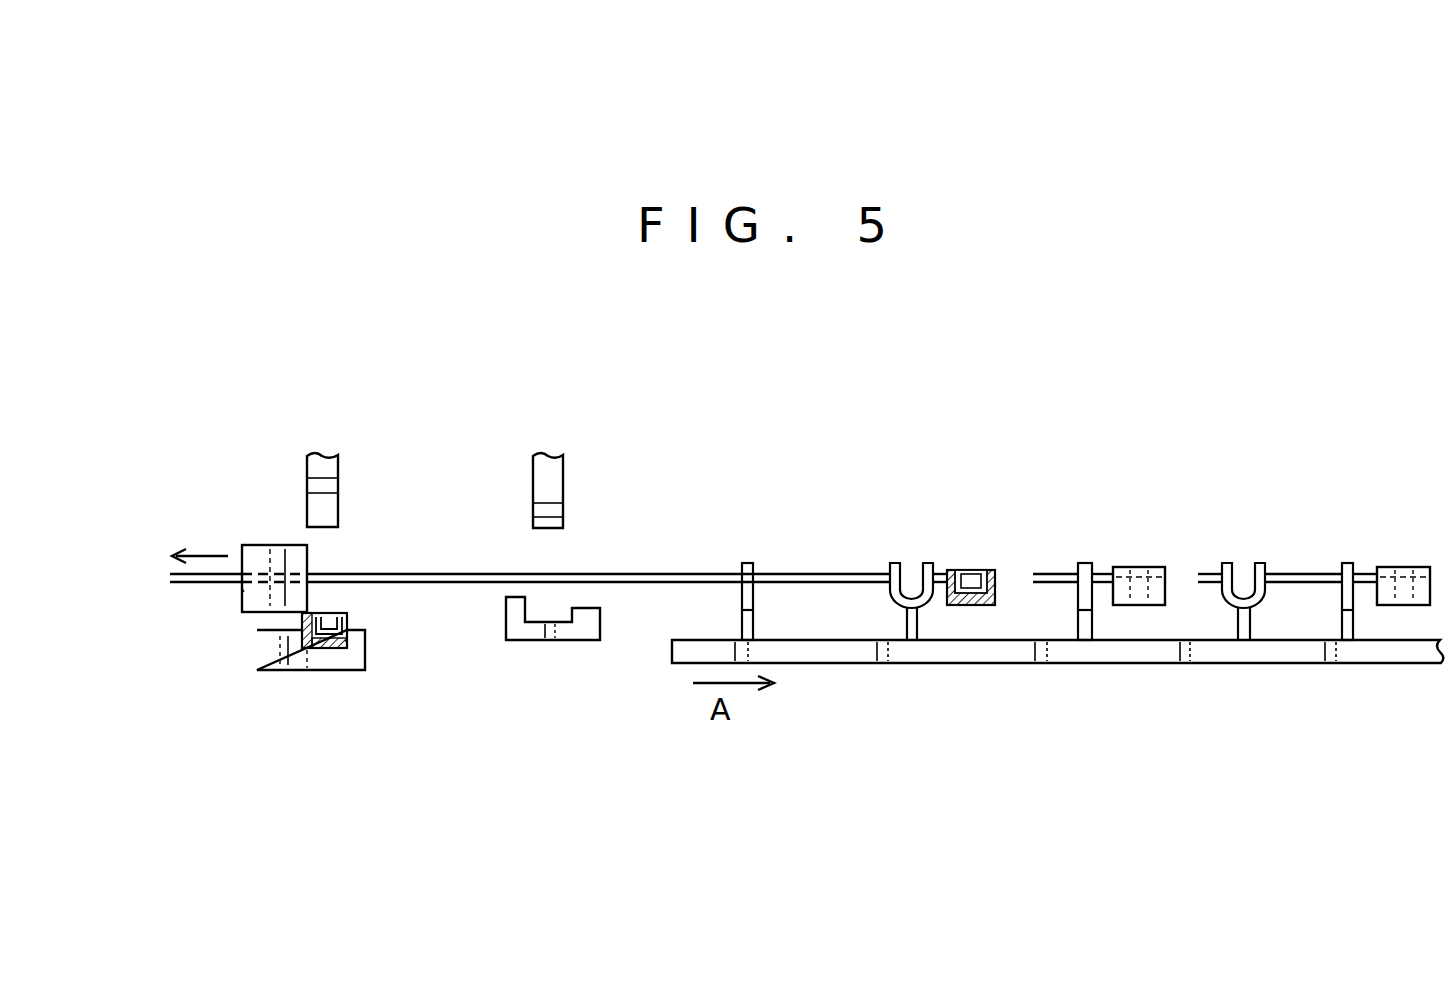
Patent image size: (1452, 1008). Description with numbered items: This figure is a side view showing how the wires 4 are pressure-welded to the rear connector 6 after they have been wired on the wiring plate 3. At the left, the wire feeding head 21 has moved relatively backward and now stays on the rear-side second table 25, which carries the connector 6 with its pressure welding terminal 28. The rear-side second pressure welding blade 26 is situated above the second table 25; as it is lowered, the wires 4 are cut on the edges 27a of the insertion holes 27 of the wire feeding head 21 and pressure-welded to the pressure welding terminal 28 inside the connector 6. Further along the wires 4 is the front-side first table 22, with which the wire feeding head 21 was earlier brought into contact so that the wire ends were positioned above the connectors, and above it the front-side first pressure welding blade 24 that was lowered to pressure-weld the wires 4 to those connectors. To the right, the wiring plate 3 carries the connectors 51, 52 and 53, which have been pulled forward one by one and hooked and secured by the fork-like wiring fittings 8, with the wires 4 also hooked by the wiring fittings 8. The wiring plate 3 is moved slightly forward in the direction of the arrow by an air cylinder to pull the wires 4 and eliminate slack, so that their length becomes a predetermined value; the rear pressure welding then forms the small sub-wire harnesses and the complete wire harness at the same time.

The wiring plate 3 is at (978, 665).
The wires 4 is at (655, 573).
The connector 6 is at (347, 643).
The wiring fittings 8 is at (890, 565).
The wire feeding head 21 is at (240, 590).
The first table 22 is at (550, 642).
The first pressure welding blade 24 is at (557, 490).
The second table 25 is at (313, 670).
The second pressure welding blade 26 is at (338, 488).
The insertion holes 27 is at (268, 572).
The edges 27a is at (310, 577).
The pressure welding terminal 28 is at (348, 620).
The connector 51 is at (1132, 568).
The connector 52 is at (1407, 568).
The connector 53 is at (985, 568).